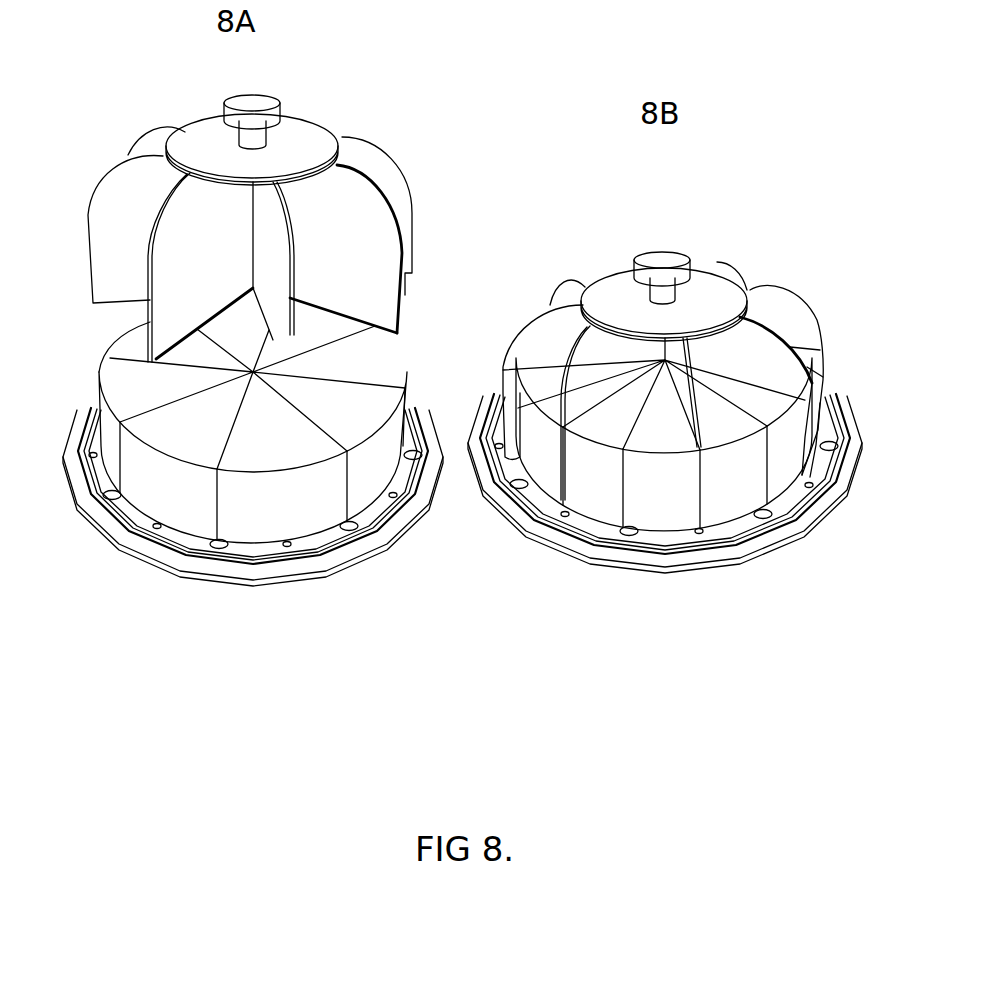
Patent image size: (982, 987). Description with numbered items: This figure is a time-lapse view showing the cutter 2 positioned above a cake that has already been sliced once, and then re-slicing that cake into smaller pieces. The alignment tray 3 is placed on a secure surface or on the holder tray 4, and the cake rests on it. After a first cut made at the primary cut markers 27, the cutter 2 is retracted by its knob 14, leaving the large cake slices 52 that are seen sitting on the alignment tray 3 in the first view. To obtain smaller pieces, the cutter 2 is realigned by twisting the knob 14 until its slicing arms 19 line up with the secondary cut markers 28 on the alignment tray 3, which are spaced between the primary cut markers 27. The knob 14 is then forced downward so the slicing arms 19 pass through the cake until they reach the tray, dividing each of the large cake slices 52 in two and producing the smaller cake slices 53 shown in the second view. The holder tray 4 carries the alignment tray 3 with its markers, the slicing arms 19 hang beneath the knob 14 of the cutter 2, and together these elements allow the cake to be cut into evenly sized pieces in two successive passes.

In FIG. 8A, the cutter 2 is at (405, 145).
In FIG. 8B, the cutter 2 is at (625, 381).
In FIG. 8A, the alignment tray 3 is at (307, 543).
In FIG. 8B, the alignment tray 3 is at (663, 533).
In FIG. 8A, the holder tray 4 is at (380, 537).
In FIG. 8A, the knob 14 is at (255, 98).
In FIG. 8B, the knob 14 is at (655, 260).
In FIG. 8A, the slicing arms 19 is at (400, 192).
In FIG. 8B, the slicing arms 19 is at (780, 313).
In FIG. 8A, the primary cut markers 27 is at (218, 548).
In FIG. 8B, the primary cut markers 27 is at (767, 516).
In FIG. 8A, the secondary cut markers 28 is at (155, 528).
In FIG. 8B, the secondary cut markers 28 is at (700, 535).
In FIG. 8A, the large cake slices 52 is at (392, 352).
In FIG. 8B, the smaller cake slices 53 is at (593, 500).